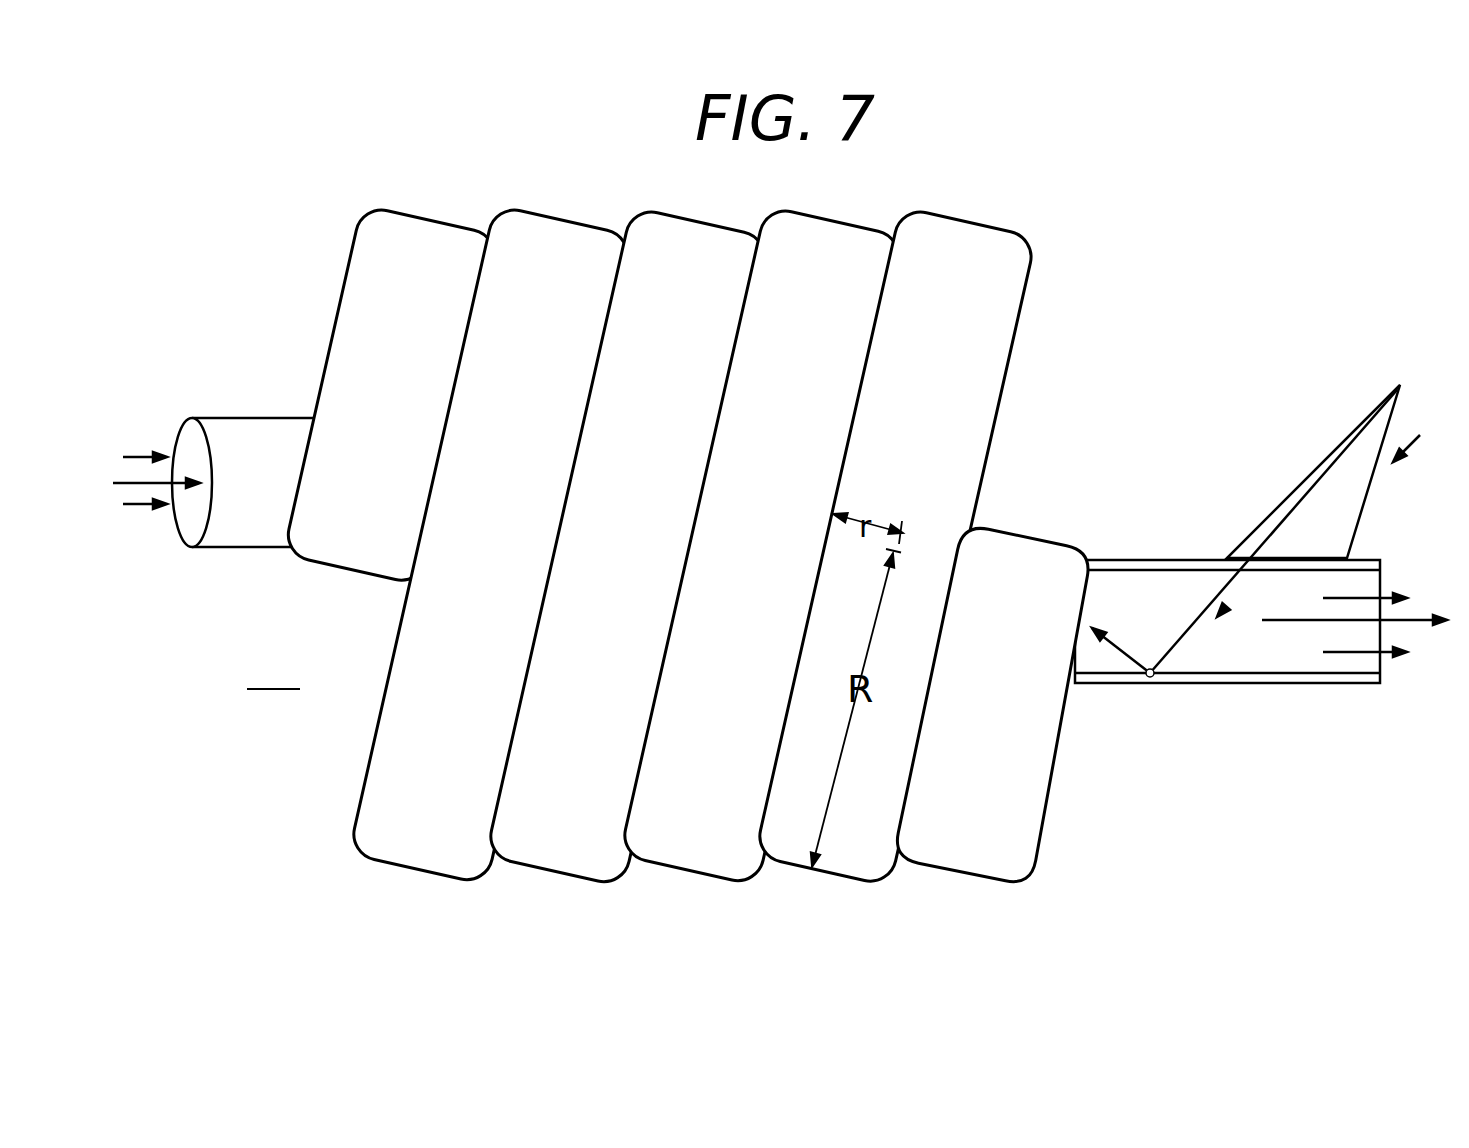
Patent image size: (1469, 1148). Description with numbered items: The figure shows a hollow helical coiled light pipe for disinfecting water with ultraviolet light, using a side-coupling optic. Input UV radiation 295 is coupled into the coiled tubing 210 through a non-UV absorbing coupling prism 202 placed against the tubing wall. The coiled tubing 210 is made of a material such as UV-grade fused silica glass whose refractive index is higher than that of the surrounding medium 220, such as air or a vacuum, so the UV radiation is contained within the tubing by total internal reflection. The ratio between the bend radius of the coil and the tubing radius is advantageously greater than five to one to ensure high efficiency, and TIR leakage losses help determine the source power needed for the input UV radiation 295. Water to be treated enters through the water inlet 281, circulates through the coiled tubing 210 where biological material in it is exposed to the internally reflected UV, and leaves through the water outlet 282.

The water inlet 281 is at (187, 440).
The water outlet 282 is at (1370, 663).
The coiled tubing 210 is at (557, 853).
The coupling prism 202 is at (1307, 490).
The input UV radiation 295 is at (1395, 455).
The surrounding medium 220 is at (220, 719).